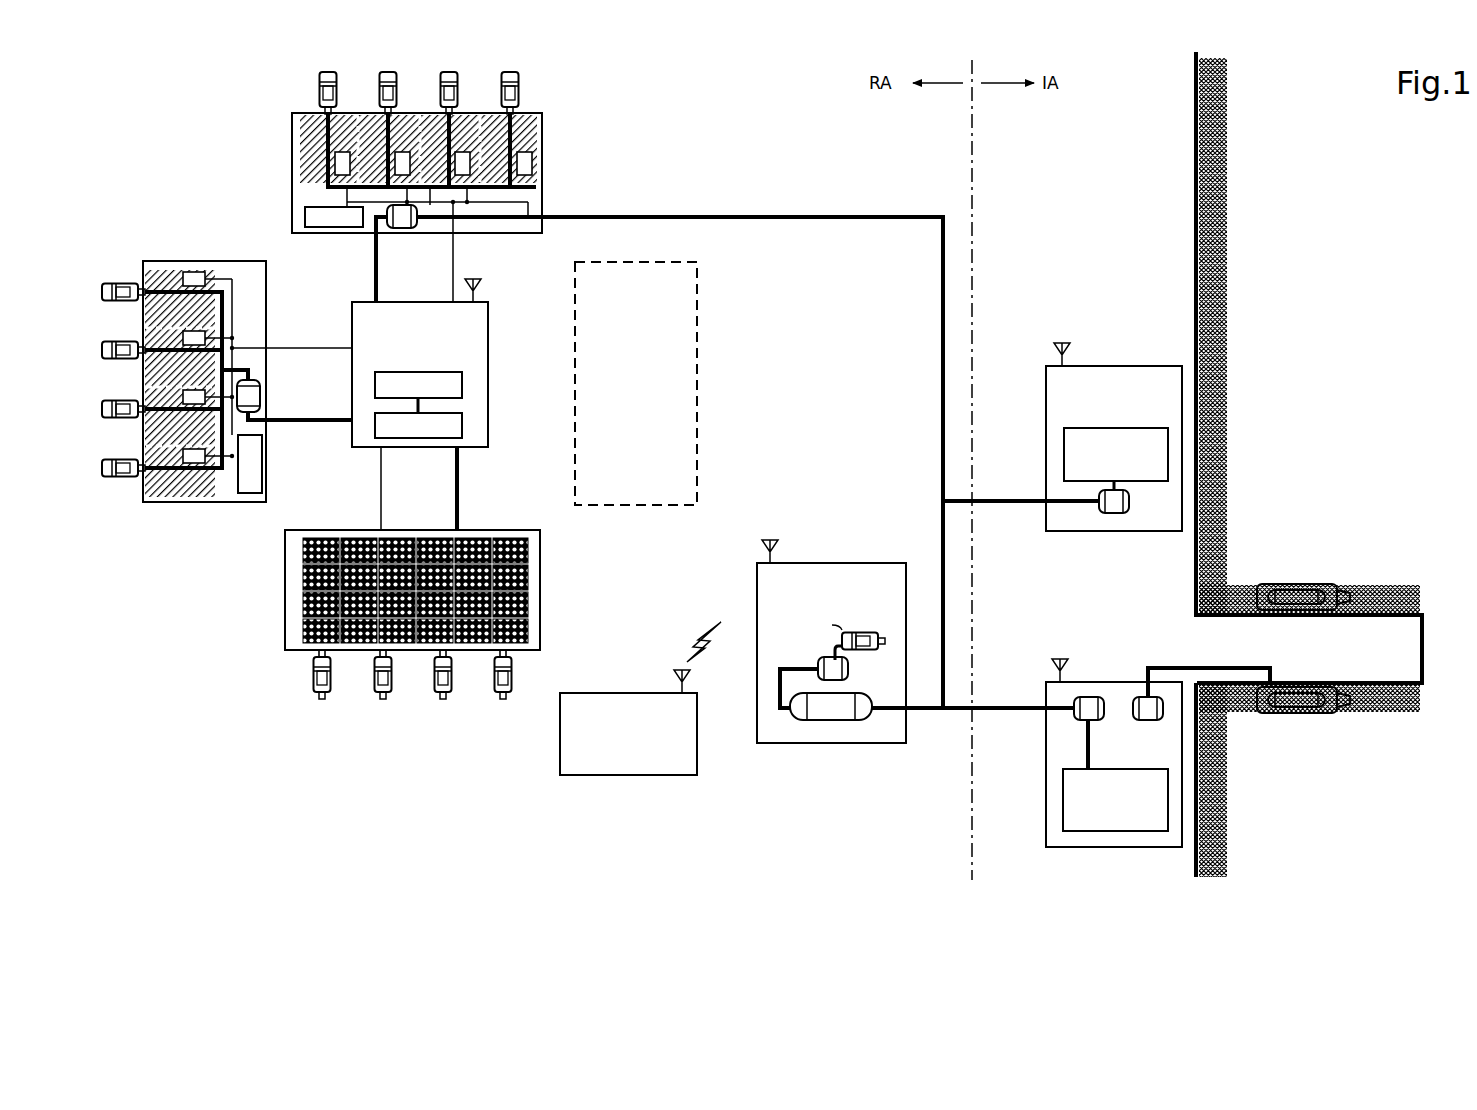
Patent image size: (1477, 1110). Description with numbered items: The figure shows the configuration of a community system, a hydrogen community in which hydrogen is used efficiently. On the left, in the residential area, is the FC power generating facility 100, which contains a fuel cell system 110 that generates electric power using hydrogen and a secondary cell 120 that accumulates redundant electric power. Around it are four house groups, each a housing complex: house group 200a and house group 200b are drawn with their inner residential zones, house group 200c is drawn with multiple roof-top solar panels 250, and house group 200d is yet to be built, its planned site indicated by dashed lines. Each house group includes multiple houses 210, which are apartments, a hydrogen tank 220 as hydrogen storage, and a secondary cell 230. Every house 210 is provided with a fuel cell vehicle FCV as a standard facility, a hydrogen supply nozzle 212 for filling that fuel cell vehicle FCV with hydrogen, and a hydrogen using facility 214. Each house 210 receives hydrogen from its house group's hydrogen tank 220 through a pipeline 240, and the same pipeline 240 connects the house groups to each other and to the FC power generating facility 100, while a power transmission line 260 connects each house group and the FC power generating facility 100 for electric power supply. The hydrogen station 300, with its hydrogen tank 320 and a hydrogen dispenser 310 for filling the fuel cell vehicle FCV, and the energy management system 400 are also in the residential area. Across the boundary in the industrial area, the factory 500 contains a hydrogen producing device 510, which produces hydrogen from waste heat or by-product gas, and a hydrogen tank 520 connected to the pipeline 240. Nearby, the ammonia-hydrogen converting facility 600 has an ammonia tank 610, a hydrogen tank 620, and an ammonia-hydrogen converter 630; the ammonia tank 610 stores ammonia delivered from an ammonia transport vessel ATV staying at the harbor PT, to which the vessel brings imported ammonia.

The FC power generating facility 100 is at (488, 328).
The fuel cell system 110 is at (462, 385).
The secondary cell 120 is at (462, 426).
The house group 200a is at (542, 124).
The house group 200b is at (165, 261).
The house group 200c is at (540, 597).
The house group 200d is at (699, 290).
The house 210 is at (375, 143).
The hydrogen supply nozzle 212 is at (516, 108).
The hydrogen using facility 214 is at (532, 163).
The hydrogen tank 220 is at (400, 228).
The secondary cell 230 is at (305, 215).
The pipeline 240 is at (372, 250).
The solar panels 250 is at (303, 629).
The power transmission line 260 is at (453, 248).
The hydrogen station 300 is at (845, 563).
The hydrogen dispenser 310 is at (848, 672).
The hydrogen tank 320 is at (823, 720).
The energy management system 400 is at (590, 693).
The factory 500 is at (1110, 366).
The hydrogen producing device 510 is at (1064, 450).
The hydrogen tank 520 is at (1112, 513).
The ammonia-hydrogen converting facility 600 is at (1095, 682).
The ammonia tank 610 is at (1163, 712).
The hydrogen tank 620 is at (1074, 716).
The ammonia-hydrogen converter 630 is at (1110, 831).
The fuel cell vehicle FCV is at (515, 76).
The ammonia transport vessel ATV is at (1297, 713).
The harbor PT is at (1390, 552).